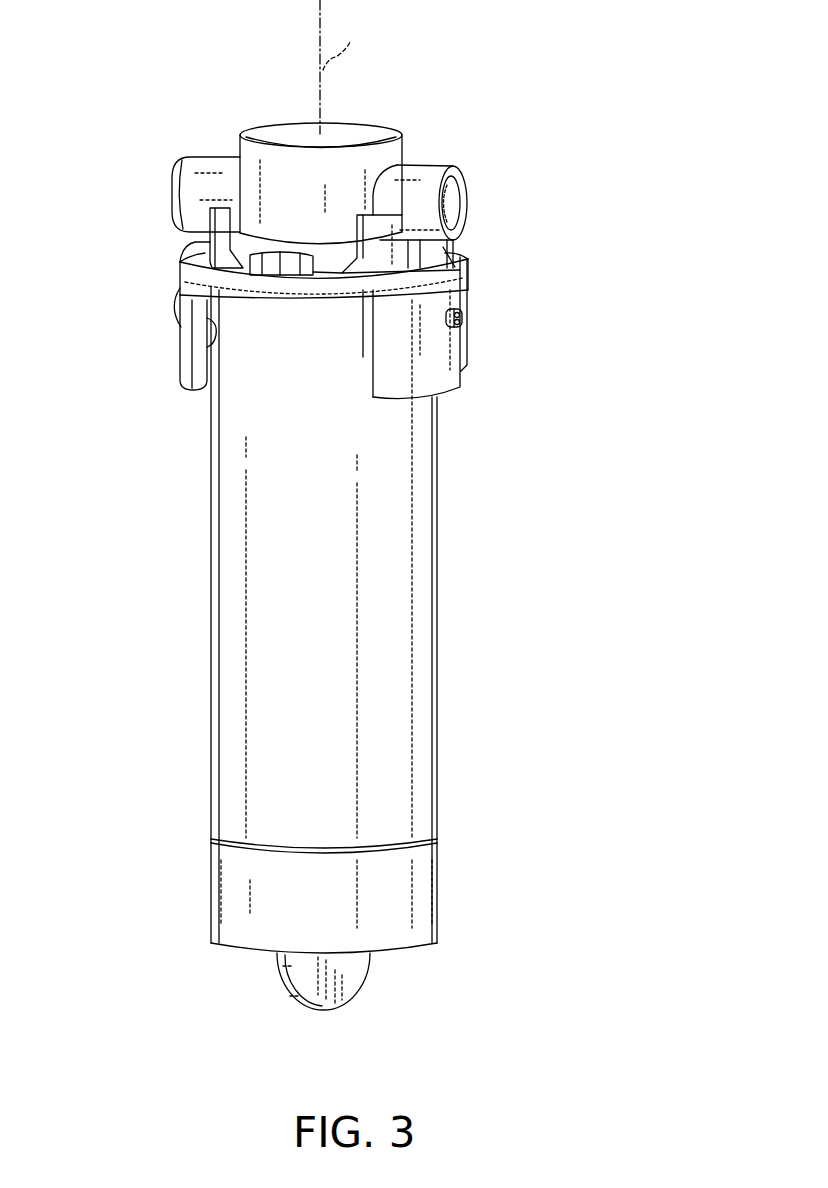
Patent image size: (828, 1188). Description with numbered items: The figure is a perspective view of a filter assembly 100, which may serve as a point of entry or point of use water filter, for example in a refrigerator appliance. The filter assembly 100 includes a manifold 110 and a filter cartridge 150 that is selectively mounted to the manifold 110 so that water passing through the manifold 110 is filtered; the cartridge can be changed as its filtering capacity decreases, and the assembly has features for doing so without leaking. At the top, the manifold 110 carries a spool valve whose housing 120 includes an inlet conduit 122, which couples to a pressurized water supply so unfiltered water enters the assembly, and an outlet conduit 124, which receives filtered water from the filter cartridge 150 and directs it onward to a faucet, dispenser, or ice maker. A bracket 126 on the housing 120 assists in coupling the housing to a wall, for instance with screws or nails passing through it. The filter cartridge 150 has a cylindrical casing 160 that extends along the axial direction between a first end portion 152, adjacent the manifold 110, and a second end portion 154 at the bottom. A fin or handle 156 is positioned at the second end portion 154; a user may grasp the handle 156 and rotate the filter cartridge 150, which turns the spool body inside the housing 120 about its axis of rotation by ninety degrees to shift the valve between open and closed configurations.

The filter assembly 100 is at (578, 247).
The manifold 110 is at (193, 243).
The housing 120 is at (396, 151).
The inlet conduit 122 is at (202, 160).
The outlet conduit 124 is at (457, 205).
The bracket 126 is at (457, 345).
The filter cartridge 150 is at (437, 703).
The first end portion 152 is at (256, 301).
The second end portion 154 is at (453, 940).
The handle 156 is at (307, 975).
The casing 160 is at (260, 547).